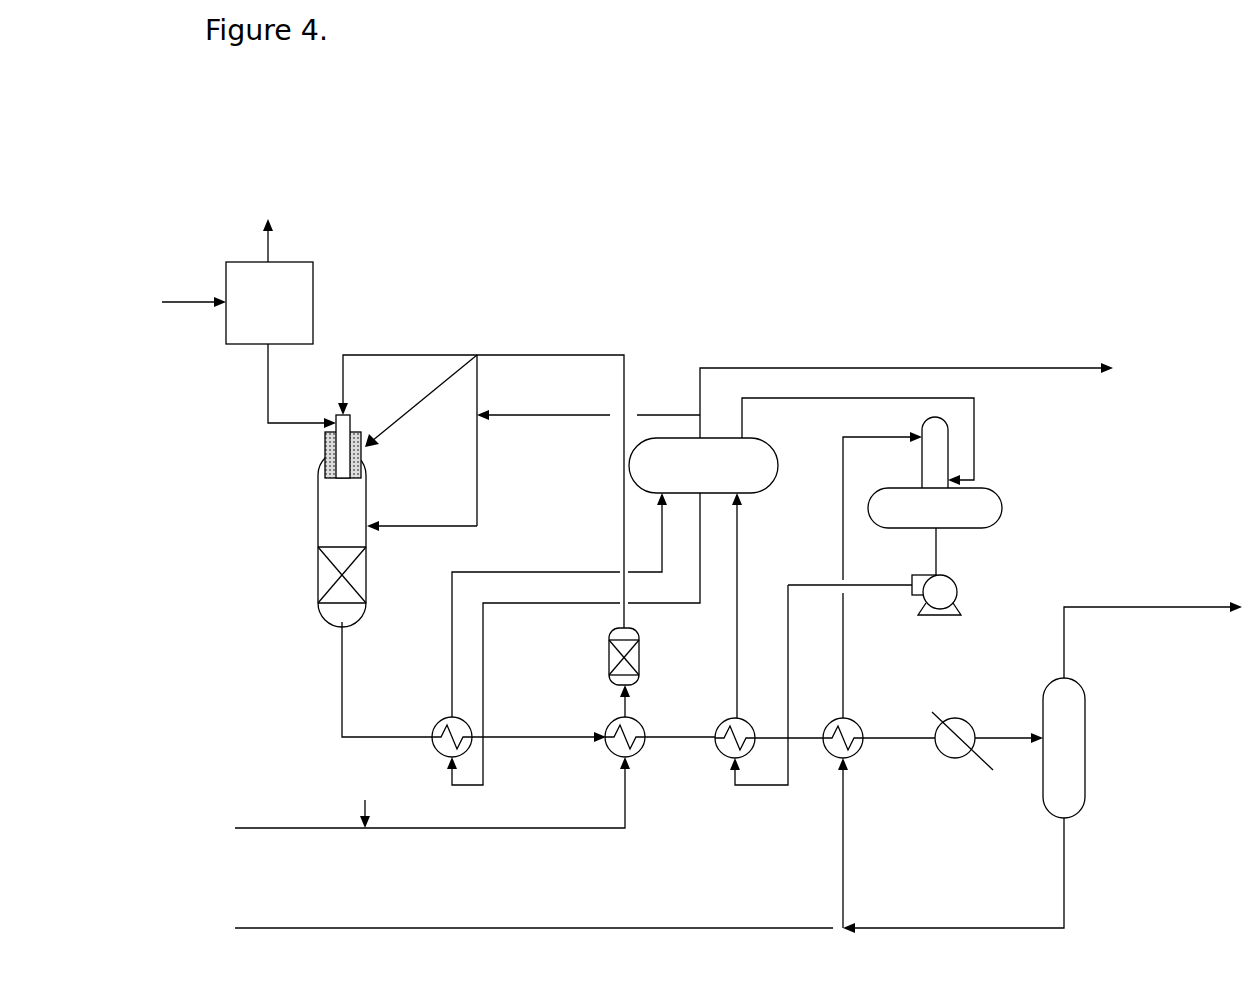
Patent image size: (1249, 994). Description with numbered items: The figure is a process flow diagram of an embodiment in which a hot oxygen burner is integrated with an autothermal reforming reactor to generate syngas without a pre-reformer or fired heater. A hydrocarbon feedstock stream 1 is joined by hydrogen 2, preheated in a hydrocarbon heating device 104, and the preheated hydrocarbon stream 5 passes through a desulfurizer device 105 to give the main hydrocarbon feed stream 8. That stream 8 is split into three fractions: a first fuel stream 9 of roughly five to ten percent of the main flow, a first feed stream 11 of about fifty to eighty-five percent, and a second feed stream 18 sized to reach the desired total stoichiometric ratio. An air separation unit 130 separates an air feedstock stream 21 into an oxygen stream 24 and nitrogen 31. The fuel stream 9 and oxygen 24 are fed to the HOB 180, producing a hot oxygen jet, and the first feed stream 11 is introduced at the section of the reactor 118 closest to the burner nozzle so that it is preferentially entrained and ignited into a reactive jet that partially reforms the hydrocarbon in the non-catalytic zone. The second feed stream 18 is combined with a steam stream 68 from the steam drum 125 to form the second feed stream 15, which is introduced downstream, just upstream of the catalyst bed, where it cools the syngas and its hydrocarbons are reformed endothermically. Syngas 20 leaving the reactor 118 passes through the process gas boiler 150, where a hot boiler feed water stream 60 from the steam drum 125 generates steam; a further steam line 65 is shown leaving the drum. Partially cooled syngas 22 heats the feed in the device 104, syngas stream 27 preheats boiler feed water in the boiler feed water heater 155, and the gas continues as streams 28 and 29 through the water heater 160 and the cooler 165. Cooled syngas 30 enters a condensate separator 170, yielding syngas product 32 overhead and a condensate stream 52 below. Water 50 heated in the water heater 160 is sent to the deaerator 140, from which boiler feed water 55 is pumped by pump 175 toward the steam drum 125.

The hydrocarbon feedstock stream 1 is at (432, 792).
The hydrogen 2 is at (367, 801).
The preheated hydrocarbon stream 5 is at (634, 701).
The main hydrocarbon feed stream 8 is at (550, 477).
The first fuel stream 9 is at (407, 370).
The first feed stream 11 is at (407, 420).
The second feed stream 15 is at (478, 473).
The second feed stream 18 is at (480, 369).
The syngas 20 is at (366, 679).
The air feedstock stream 21 is at (193, 315).
The partially cooled syngas 22 is at (539, 726).
The oxygen stream 24 is at (288, 386).
The syngas stream 27 is at (704, 743).
The stream 28 is at (800, 742).
The stream 29 is at (893, 742).
The cooled syngas 30 is at (1000, 740).
The nitrogen 31 is at (284, 240).
The syngas product 32 is at (1153, 629).
The stream 50 is at (534, 913).
The stream 52 is at (951, 845).
The boiler feed water 55 is at (955, 560).
The hot boiler feed water stream 60 is at (753, 605).
The stream 65 is at (906, 384).
The steam stream 68 is at (588, 427).
The hydrocarbon heating device 104 is at (638, 747).
The desulfurizer device 105 is at (642, 656).
The reactor 118 is at (342, 539).
The steam drum 125 is at (703, 465).
The air separation unit 130 is at (269, 303).
The deaerator 140 is at (872, 558).
The process gas boiler 150 is at (479, 745).
The boiler feed water heater 155 is at (751, 699).
The water heater 160 is at (857, 748).
The cooler 165 is at (962, 754).
The separator 170 is at (1090, 748).
The pump 175 is at (874, 612).
The HOB 180 is at (352, 432).